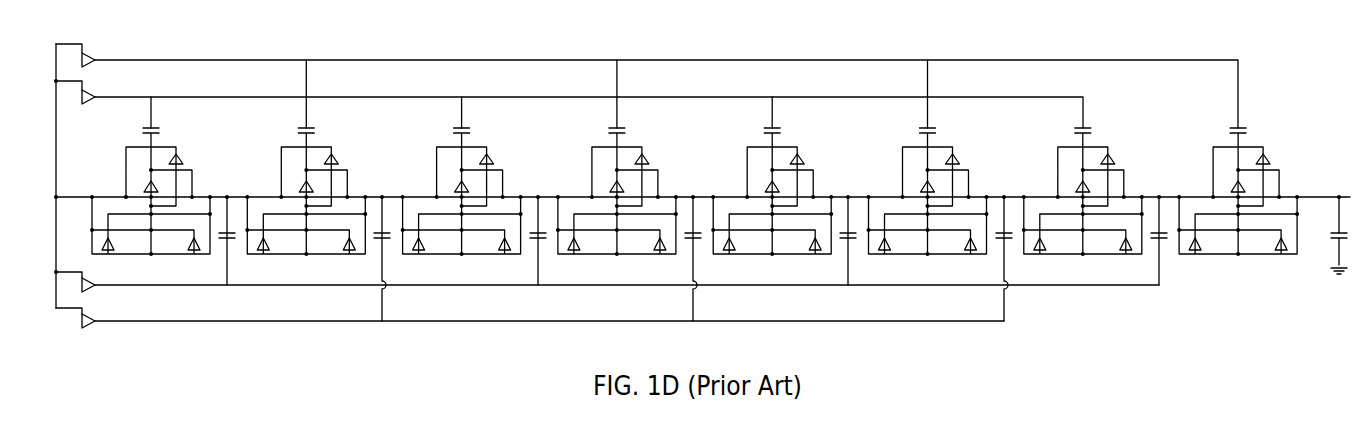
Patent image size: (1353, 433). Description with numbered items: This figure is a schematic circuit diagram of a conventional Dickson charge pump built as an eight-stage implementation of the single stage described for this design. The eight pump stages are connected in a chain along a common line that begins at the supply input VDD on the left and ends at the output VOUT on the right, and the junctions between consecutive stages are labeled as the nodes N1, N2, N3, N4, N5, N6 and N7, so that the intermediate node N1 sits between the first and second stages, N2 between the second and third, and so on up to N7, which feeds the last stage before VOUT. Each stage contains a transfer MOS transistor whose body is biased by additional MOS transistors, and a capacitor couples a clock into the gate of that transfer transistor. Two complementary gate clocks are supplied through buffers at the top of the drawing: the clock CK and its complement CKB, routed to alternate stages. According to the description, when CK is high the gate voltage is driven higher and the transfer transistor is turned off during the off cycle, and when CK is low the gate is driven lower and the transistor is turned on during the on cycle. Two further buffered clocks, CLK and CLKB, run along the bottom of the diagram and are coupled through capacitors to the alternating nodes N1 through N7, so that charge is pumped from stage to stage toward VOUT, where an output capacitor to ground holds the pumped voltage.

The supply voltage input VDD is at (702, 176).
The output voltage node VOUT is at (1330, 227).
The pump stage node 1 N1 is at (226, 233).
The pump stage node 2 N2 is at (381, 251).
The pump stage node 3 N3 is at (537, 233).
The pump stage node 4 N4 is at (692, 251).
The pump stage node 5 N5 is at (847, 233).
The pump stage node 6 N6 is at (1003, 251).
The pump stage node 7 N7 is at (1158, 233).
The clock CK is at (647, 86).
The complementary clock signal CKB is at (569, 104).
The clock signal CLK is at (607, 286).
The complementary clock signal CLKB is at (530, 323).